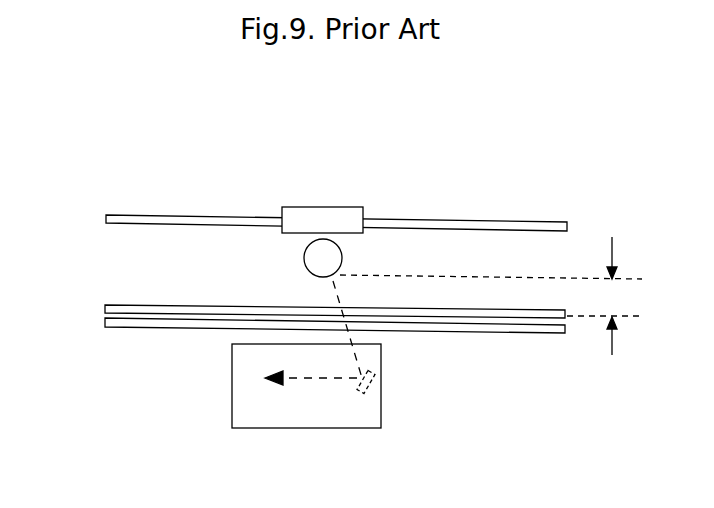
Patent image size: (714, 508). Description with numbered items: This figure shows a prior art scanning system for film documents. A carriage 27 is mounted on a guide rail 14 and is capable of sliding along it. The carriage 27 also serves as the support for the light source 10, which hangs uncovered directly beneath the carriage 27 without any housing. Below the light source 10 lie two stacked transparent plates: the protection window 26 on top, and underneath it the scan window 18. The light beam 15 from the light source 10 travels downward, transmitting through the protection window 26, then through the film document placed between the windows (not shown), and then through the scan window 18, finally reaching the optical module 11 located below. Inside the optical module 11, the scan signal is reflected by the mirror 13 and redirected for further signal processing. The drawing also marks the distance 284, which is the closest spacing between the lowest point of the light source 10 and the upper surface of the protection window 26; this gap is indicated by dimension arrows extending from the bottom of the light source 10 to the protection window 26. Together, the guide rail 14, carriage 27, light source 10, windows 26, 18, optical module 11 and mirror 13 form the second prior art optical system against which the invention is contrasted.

The guide rail 14 is at (115, 215).
The carriage 27 is at (300, 218).
The light source 10 is at (330, 257).
The light beam 15 is at (332, 290).
The protection window 26 is at (105, 305).
The scan window 18 is at (117, 327).
The optical module 11 is at (281, 417).
The mirror 13 is at (370, 385).
The distance 284 is at (515, 296).